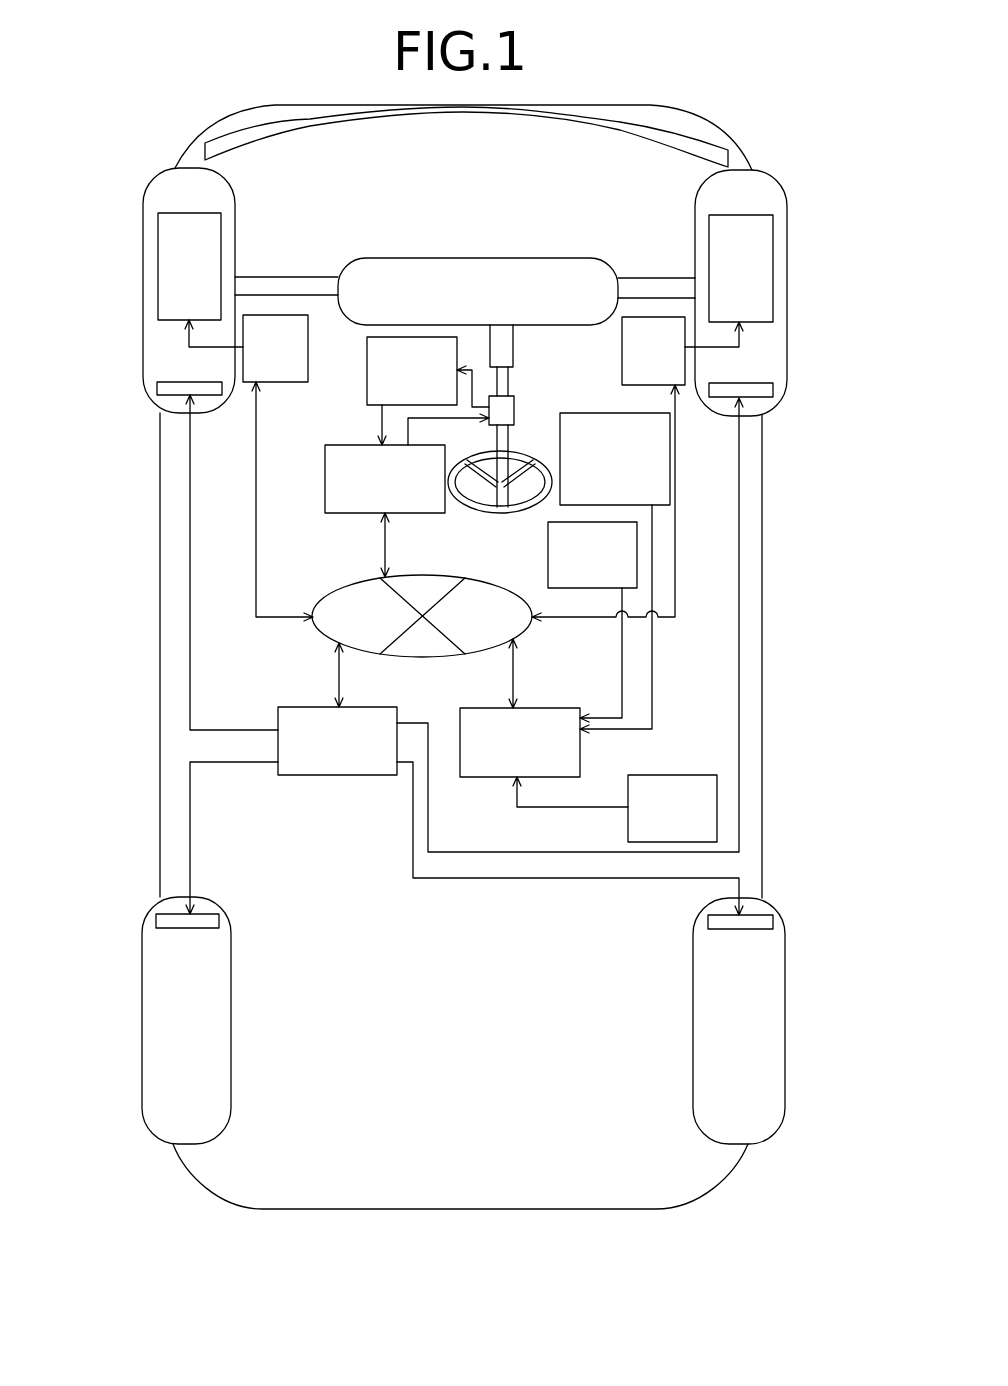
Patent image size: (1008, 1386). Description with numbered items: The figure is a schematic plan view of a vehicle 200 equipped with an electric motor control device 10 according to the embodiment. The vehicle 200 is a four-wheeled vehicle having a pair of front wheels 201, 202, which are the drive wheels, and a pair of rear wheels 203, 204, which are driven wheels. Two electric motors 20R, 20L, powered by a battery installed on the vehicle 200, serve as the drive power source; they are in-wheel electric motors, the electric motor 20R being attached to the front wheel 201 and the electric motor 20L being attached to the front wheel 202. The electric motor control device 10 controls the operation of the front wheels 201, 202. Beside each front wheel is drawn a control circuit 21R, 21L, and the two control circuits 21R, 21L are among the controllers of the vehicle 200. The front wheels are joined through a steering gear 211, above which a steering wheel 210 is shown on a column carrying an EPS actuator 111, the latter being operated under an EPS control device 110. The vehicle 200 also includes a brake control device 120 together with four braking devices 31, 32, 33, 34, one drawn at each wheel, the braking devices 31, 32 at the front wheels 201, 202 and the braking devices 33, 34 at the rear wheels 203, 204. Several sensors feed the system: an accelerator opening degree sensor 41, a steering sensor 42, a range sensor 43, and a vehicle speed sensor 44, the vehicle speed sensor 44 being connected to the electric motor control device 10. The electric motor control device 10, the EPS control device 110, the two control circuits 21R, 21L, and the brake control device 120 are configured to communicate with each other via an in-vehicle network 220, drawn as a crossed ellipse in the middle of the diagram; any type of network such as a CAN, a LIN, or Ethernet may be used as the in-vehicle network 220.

The vehicle 200 is at (780, 611).
The front wheel 201 is at (787, 320).
The front wheel 202 is at (143, 327).
The rear wheel 203 is at (786, 1048).
The rear wheel 204 is at (142, 1050).
The electric motor 20L is at (157, 242).
The electric motor 20R is at (775, 240).
The control circuit 21L is at (330, 355).
The control circuit 21R is at (620, 373).
The steering gear 211 is at (447, 258).
The EPS actuator 111 is at (515, 408).
The steering wheel 210 is at (483, 513).
The steering sensor 42 is at (365, 392).
The EPS control device 110 is at (407, 517).
The accelerator opening degree sensor 41 is at (613, 413).
The range sensor 43 is at (548, 570).
The in-vehicle network 220 is at (343, 585).
The brake control device 120 is at (322, 777).
The electric motor control device 10 is at (482, 777).
The vehicle speed sensor 44 is at (670, 775).
The braking device 31 is at (723, 398).
The braking device 32 is at (207, 395).
The braking device 33 is at (708, 922).
The braking device 34 is at (219, 921).